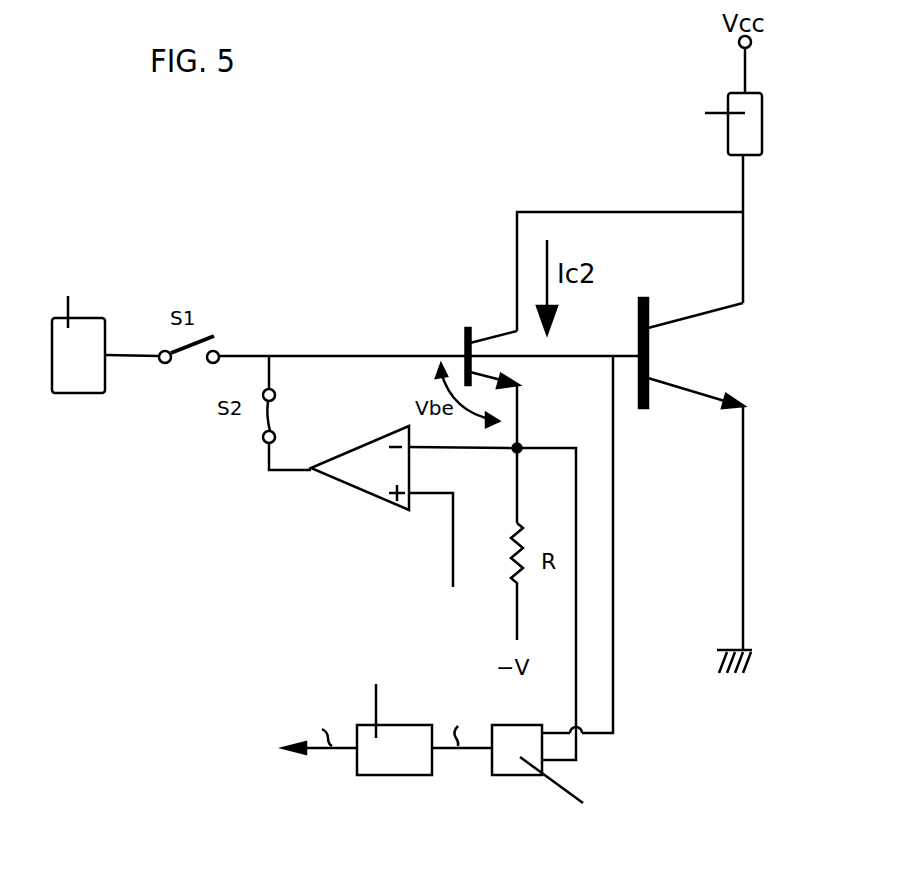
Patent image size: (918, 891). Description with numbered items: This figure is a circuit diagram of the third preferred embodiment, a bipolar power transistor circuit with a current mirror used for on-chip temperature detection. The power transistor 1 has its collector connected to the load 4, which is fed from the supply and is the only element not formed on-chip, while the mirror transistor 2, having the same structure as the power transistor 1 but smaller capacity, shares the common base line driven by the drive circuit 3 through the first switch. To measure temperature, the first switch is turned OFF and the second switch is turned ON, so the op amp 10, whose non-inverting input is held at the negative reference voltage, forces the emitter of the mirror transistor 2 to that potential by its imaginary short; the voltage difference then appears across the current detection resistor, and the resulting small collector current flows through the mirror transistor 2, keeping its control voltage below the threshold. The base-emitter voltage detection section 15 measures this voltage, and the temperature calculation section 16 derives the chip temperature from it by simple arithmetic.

The power transistor 1 is at (645, 292).
The mirror transistor 2 is at (466, 328).
The drive circuit 3 is at (95, 318).
The load 4 is at (764, 134).
The op amp 10 is at (358, 446).
The Vbe detection section 15 is at (506, 775).
The temperature calculation section 16 is at (378, 775).